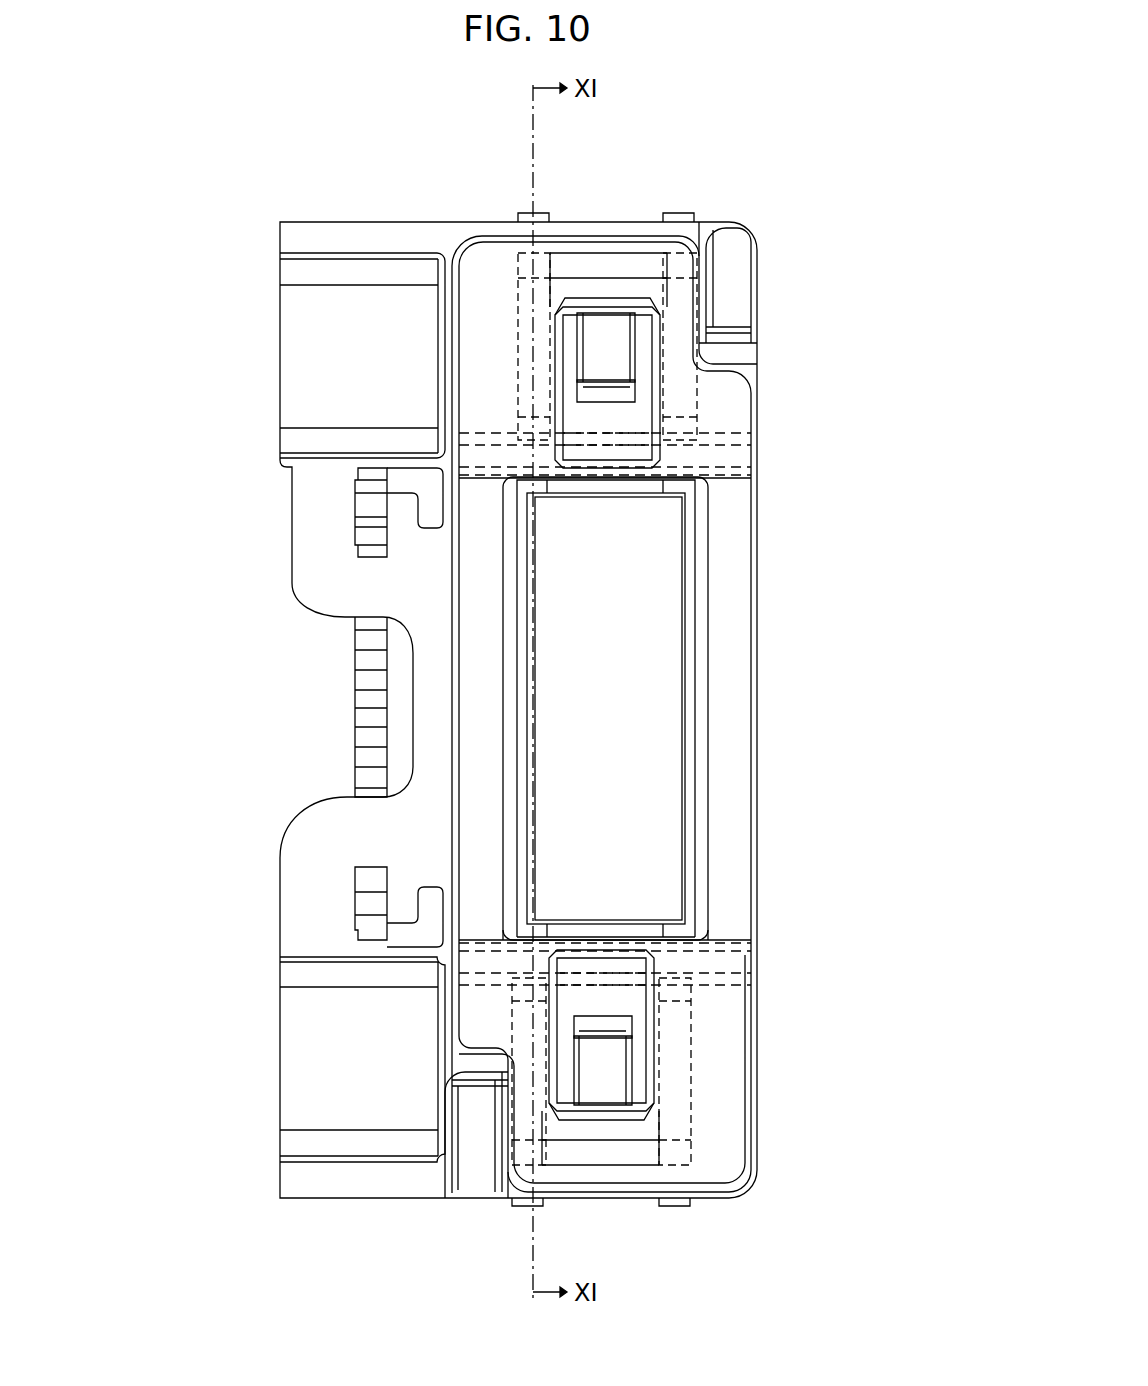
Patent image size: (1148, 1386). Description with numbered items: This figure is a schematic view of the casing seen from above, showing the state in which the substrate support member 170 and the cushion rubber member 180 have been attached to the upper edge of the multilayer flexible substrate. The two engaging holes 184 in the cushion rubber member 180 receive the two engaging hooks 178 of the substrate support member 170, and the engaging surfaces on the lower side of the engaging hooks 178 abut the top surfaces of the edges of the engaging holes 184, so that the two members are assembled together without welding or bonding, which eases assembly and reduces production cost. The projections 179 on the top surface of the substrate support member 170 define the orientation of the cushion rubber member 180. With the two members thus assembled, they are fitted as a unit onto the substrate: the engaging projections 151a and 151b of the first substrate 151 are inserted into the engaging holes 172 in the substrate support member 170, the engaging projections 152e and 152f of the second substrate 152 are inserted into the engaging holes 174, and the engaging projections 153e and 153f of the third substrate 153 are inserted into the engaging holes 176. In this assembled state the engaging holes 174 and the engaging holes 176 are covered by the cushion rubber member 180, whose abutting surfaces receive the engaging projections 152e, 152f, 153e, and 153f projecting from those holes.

The first substrate 151 is at (372, 711).
The engaging projection 151a is at (372, 492).
The engaging projection 151b is at (372, 882).
The second substrate 152 is at (540, 212).
The engaging projection 152e is at (548, 262).
The engaging projection 152f is at (540, 1120).
The third substrate 153 is at (676, 300).
The engaging projection 153e is at (702, 282).
The engaging projection 153f is at (685, 1112).
The substrate support member 170 is at (398, 240).
The engaging holes 172 is at (362, 510).
The engaging holes 174 is at (522, 347).
The engaging holes 176 is at (688, 411).
The engaging hooks 178 is at (607, 337).
The projections 179 is at (725, 280).
The cushion rubber member 180 is at (742, 637).
The engaging holes 184 is at (633, 390).